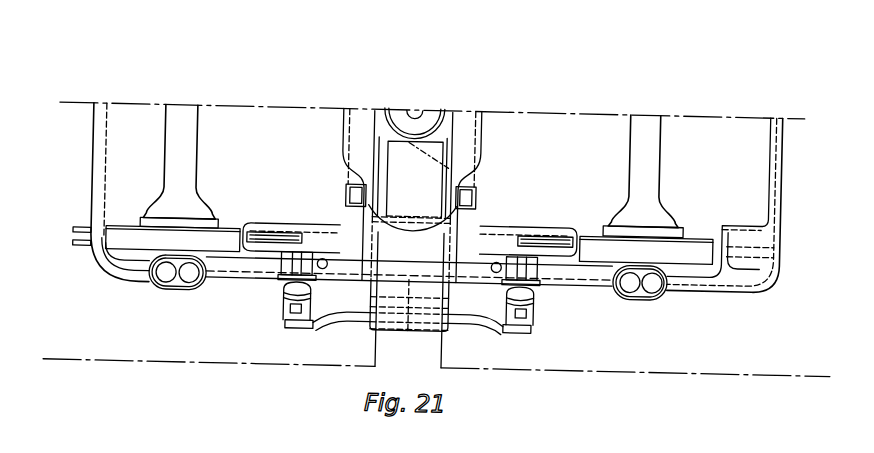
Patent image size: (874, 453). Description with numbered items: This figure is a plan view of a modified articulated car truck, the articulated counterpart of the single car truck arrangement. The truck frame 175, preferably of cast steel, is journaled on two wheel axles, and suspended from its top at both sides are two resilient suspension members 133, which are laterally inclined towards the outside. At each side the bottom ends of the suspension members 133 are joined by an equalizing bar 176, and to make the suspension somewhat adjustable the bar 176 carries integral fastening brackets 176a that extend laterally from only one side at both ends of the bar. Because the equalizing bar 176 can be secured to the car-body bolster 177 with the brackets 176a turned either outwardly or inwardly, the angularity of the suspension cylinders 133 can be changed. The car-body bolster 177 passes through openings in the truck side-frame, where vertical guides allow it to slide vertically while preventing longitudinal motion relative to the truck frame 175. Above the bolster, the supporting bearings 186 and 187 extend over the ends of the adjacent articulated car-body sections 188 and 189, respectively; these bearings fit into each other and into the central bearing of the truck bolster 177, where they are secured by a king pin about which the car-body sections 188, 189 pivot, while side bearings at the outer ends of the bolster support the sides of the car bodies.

The resilient suspension member 133 is at (283, 303).
The truck frame 175 is at (715, 288).
The equalizing bar 176 is at (468, 326).
The fastening bracket 176a is at (320, 330).
The car-body bolster 177 is at (450, 152).
The supporting bearing 186 is at (392, 146).
The supporting bearing 187 is at (433, 167).
The car-body section 188 is at (235, 366).
The car-body section 189 is at (630, 368).